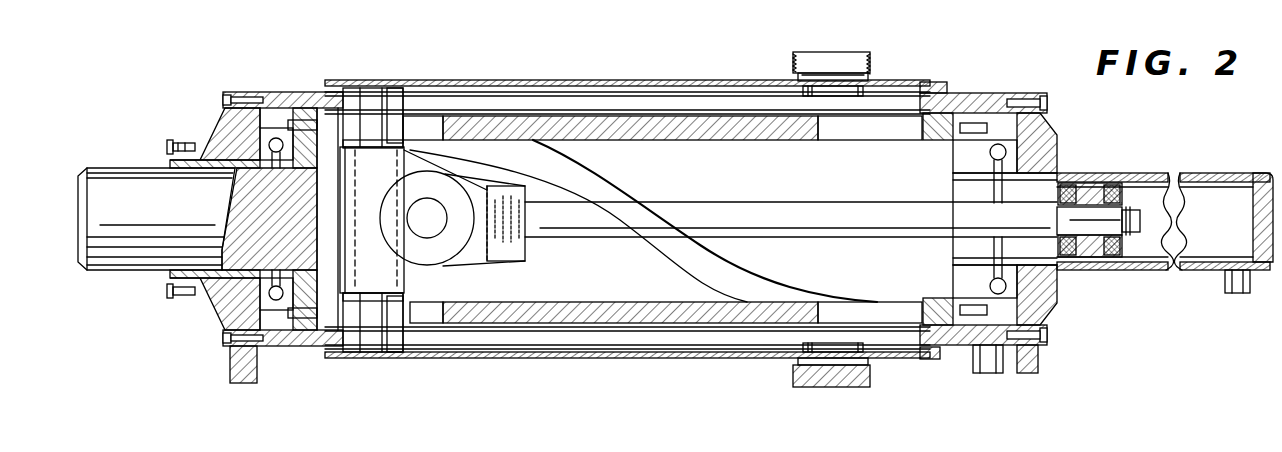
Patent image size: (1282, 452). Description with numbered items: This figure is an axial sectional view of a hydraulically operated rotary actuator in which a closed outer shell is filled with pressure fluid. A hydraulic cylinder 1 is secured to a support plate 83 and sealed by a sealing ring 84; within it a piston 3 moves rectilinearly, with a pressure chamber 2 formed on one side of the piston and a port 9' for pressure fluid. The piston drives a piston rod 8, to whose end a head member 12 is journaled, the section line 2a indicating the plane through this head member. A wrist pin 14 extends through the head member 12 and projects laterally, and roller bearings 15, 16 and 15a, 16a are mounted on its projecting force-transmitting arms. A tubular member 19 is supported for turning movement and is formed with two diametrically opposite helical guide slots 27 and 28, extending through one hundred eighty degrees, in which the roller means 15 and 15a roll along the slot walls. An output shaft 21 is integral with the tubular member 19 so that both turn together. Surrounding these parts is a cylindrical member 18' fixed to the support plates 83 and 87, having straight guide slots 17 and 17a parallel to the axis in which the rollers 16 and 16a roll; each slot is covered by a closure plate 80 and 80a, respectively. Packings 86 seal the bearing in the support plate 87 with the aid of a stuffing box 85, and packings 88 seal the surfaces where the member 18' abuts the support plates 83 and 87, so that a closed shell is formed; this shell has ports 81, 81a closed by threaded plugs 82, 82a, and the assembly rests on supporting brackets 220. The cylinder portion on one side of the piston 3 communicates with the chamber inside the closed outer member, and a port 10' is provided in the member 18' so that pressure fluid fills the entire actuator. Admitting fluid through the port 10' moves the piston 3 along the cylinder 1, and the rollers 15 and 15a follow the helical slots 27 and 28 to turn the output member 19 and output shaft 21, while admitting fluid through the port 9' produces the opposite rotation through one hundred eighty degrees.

The hydraulic cylinder 1 is at (1130, 174).
The pressure chamber 2 is at (1135, 271).
The piston 3 is at (1083, 270).
The piston rod 8 is at (795, 203).
The port 9' is at (1237, 297).
The port 10' is at (999, 372).
The head member 12 is at (412, 292).
The wrist pin 14 is at (372, 88).
The roller bearing 15 is at (400, 128).
The roller bearing 15a is at (410, 350).
The roller bearing 16 is at (408, 90).
The roller bearing 16a is at (397, 350).
The straight guide slot 17 is at (662, 92).
The straight guide slot 17a is at (635, 350).
The cylindrical guide member 18' is at (964, 194).
The tubular member 19 is at (723, 326).
The output shaft 21 is at (147, 265).
The helical guide slot 27 is at (757, 274).
The helical guide slot 28 is at (860, 140).
The closure plate 80 is at (924, 84).
The closure plate 80a is at (930, 362).
The port 81 is at (870, 76).
The port 81a is at (868, 372).
The threaded plug 82 is at (822, 54).
The threaded plug 82a is at (822, 388).
The support plate 83 is at (1057, 132).
The sealing ring 84 is at (1048, 168).
The stuffing box 85 is at (176, 146).
The packing 86 is at (208, 135).
The support plate 87 is at (210, 303).
The packing 88 is at (258, 92).
The supporting bracket 220 is at (257, 368).
The section line 2a is at (325, 215).